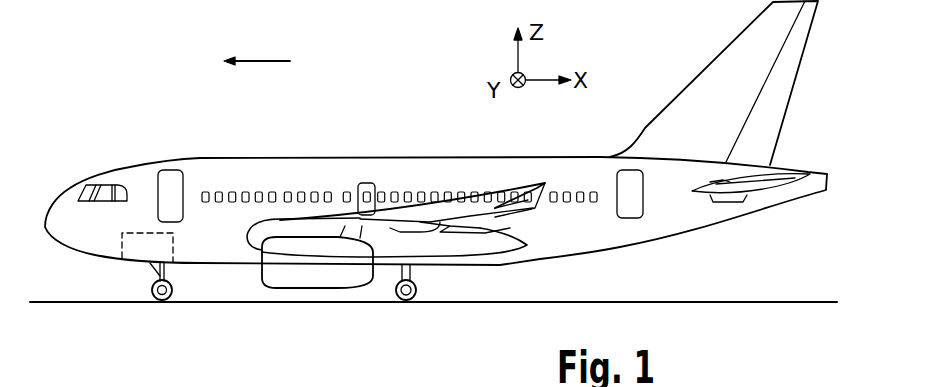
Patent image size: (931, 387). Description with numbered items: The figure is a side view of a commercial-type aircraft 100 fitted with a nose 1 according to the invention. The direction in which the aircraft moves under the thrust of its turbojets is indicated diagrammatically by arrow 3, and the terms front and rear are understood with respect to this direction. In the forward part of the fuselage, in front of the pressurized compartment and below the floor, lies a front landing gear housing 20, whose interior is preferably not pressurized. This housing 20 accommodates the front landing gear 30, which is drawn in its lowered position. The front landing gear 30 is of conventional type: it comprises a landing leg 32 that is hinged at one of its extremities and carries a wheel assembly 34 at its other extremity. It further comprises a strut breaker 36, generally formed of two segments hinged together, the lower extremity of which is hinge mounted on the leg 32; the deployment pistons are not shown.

The nose 1 is at (103, 148).
The arrow 3 is at (270, 61).
The aircraft 100 is at (374, 102).
The front landing gear housing 20 is at (137, 247).
The front landing gear 30 is at (178, 276).
The landing leg 32 is at (155, 290).
The wheel assembly 34 is at (163, 301).
The strut breaker 36 is at (152, 266).